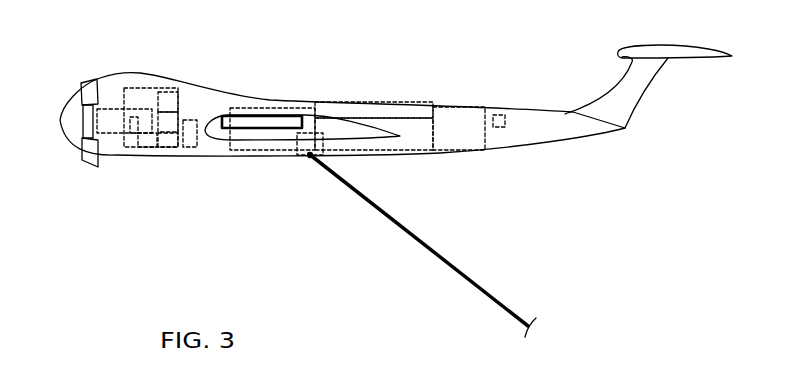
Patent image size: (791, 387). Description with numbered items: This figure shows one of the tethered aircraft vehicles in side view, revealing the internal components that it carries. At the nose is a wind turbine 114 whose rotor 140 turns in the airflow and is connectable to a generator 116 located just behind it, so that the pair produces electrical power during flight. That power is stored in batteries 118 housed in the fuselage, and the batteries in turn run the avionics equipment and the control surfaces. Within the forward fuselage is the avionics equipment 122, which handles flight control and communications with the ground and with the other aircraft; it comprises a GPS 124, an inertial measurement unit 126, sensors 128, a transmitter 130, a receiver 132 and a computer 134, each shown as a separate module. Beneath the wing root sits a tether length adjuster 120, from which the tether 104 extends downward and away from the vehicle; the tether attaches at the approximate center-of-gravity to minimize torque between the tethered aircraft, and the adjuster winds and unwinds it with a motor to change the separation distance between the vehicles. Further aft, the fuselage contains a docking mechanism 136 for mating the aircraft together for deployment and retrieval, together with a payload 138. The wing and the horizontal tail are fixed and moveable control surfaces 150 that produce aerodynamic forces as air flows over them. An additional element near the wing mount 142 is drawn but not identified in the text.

The tether 104 is at (410, 249).
The wind turbine 114 is at (73, 90).
The generator 116 is at (113, 120).
The batteries 118 is at (410, 143).
The tether length adjuster 120 is at (300, 150).
The avionics equipment 122 is at (138, 92).
The GPS 124 is at (163, 98).
The inertial measurement unit 126 is at (167, 110).
The sensors 128 is at (136, 122).
The transmitter 130 is at (143, 140).
The receiver 132 is at (167, 143).
The computer 134 is at (191, 138).
The docking mechanism 136 is at (380, 108).
The payload 138 is at (447, 117).
The rotor 140 is at (75, 157).
The wing mount 142 is at (265, 120).
The control surfaces 150 is at (348, 132).